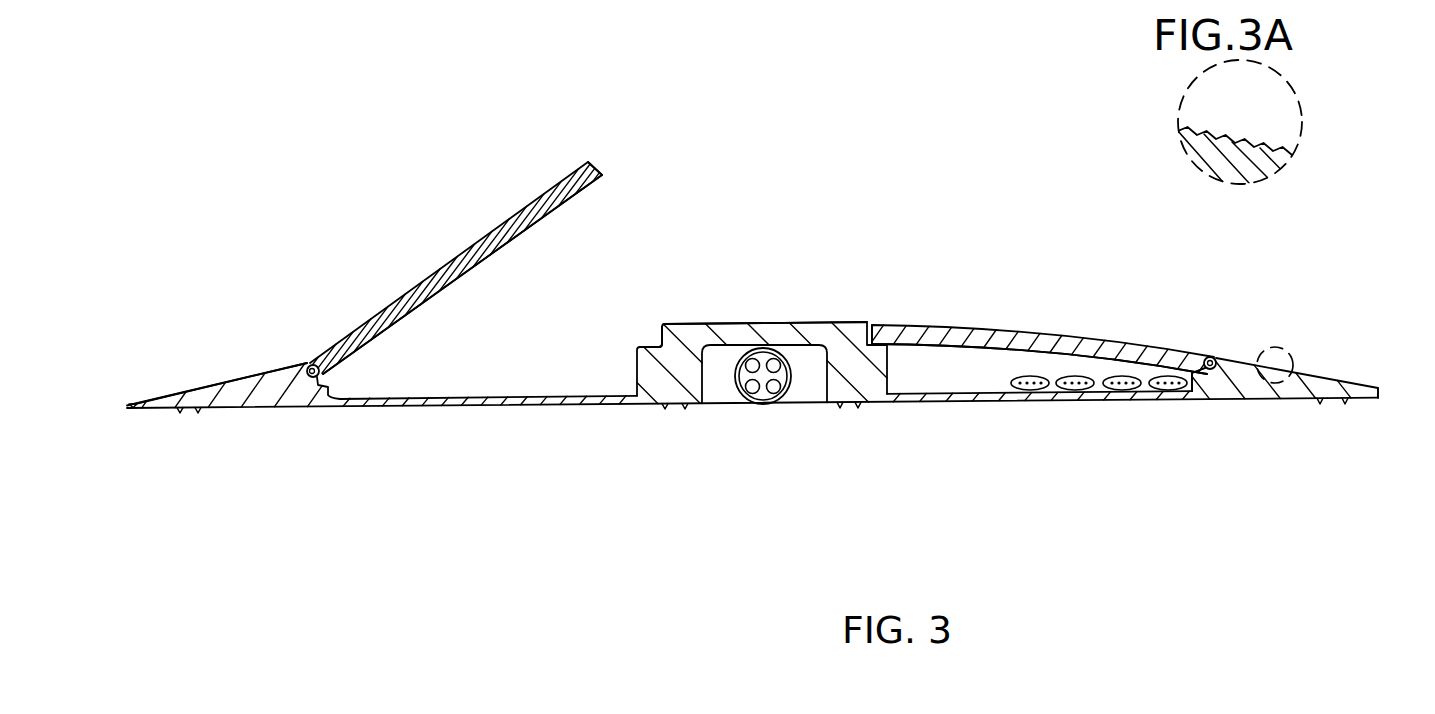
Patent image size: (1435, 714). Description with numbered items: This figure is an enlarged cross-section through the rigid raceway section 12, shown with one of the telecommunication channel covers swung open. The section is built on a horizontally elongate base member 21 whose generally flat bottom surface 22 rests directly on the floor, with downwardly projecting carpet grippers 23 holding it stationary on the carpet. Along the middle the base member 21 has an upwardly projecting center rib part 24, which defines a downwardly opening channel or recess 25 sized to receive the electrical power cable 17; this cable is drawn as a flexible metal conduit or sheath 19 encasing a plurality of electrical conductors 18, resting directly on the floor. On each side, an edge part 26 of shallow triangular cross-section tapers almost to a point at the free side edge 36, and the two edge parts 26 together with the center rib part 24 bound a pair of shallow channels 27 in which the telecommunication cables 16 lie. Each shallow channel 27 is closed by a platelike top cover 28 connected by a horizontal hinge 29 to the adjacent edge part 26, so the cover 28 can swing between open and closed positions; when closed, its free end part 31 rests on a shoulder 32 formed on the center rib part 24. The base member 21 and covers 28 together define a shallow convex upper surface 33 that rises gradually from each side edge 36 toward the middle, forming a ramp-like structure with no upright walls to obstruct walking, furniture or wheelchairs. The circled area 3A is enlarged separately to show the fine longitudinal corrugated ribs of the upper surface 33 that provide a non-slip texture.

The rigid raceway section 12 is at (943, 270).
The telecommunication cables 16 is at (1025, 390).
The electrical power cable 17 is at (750, 405).
The electrical conductors 18 is at (760, 380).
The flexible metal conduit or sheath 19 is at (785, 400).
The base member 21 is at (1203, 410).
The bottom surface 22 is at (575, 405).
The carpet grippers 23 is at (202, 410).
The center rib part 24 is at (662, 383).
The channel or recess 25 is at (703, 385).
The edge parts 26 is at (287, 393).
The shallow channels 27 is at (500, 380).
The top cover 28 is at (418, 285).
The hinge 29 is at (307, 365).
The free end part 31 is at (587, 160).
The shoulder 32 is at (650, 347).
The upper surface 33 is at (370, 320).
The side edge 36 is at (124, 407).
The circled area 3A is at (1265, 348).